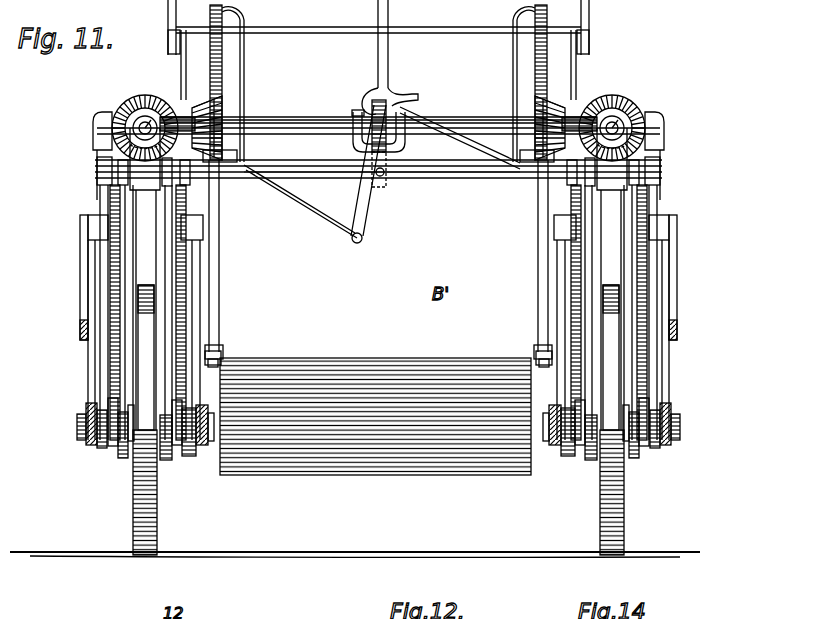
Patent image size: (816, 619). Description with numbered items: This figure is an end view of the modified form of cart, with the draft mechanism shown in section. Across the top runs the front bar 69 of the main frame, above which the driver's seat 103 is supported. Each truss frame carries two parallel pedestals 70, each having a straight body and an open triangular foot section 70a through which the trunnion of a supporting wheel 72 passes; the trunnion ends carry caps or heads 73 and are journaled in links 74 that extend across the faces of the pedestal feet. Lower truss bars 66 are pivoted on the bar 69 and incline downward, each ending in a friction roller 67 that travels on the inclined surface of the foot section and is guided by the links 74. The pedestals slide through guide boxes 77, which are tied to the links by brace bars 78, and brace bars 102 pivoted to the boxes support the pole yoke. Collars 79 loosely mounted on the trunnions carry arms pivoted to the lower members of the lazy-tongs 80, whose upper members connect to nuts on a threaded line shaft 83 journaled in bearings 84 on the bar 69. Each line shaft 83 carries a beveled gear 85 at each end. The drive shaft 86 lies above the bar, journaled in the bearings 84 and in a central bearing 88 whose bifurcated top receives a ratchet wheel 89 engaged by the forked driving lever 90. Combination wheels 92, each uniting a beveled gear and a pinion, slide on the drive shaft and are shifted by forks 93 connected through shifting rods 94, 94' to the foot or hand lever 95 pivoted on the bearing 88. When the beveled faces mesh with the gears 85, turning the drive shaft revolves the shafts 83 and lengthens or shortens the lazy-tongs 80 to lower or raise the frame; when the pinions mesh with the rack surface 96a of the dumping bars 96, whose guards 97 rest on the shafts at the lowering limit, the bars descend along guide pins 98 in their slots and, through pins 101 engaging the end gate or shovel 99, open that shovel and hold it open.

The driver's seat 103 is at (430, 28).
The rack surface 96a is at (222, 55).
The guard 97 is at (244, 92).
The combination wheel 92 is at (212, 100).
The fork 93 is at (237, 160).
The beveled gear 85 is at (155, 100).
The line shaft 83 is at (140, 100).
The bearing 84 is at (378, 159).
The pedestal 70 is at (100, 140).
The driving lever 90 is at (388, 65).
The ratchet wheel 89 is at (372, 100).
The drive shaft 86 is at (480, 126).
The central bearing 88 is at (388, 188).
The foot or hand lever 95 is at (363, 174).
The shifting rod 94 is at (300, 201).
The shifting rod 94' is at (460, 138).
The front and rear bars 69 is at (478, 182).
The lower truss bar 66 is at (110, 190).
The brace bar 78 is at (100, 315).
The box 77 is at (680, 222).
The brace bar 102 is at (80, 300).
The lazy-tongs 80 is at (160, 268).
The dumping bar 96 is at (222, 218).
The guide pin 98 is at (223, 352).
The pin 101 is at (225, 363).
The end gate or shovel 99 is at (438, 362).
The cap or head 73 is at (77, 425).
The link 74 is at (90, 443).
The friction roller 67 is at (105, 410).
The collar 79 is at (167, 424).
The triangular foot section 70a is at (670, 460).
The supporting wheel 72 is at (157, 530).